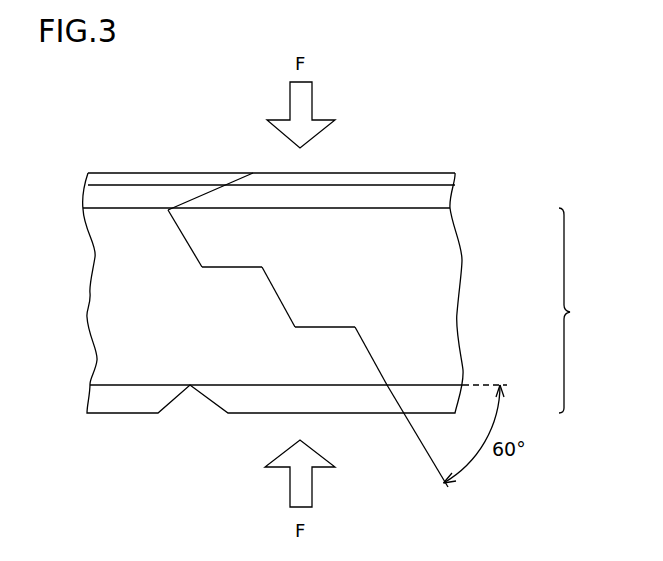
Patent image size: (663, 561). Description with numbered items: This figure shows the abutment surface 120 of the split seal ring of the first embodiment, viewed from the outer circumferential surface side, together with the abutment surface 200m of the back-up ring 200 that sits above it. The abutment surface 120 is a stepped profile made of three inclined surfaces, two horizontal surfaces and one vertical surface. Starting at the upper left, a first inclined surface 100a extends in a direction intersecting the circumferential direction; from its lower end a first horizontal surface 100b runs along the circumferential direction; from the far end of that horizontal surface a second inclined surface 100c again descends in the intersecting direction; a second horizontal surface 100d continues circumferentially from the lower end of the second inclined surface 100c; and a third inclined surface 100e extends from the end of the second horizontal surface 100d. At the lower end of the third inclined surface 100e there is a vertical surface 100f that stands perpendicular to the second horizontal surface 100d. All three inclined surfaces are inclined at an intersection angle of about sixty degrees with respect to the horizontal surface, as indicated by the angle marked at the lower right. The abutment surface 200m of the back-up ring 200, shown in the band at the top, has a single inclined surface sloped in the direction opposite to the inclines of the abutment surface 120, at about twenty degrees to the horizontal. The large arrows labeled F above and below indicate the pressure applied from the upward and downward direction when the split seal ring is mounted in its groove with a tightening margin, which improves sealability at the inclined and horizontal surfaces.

The back-up ring 200 is at (130, 193).
The abutment surface of back-up ring 200m is at (198, 192).
The first inclined surface 100a is at (190, 240).
The first horizontal surface 100b is at (228, 260).
The second inclined surface 100c is at (283, 298).
The second horizontal surface 100d is at (332, 322).
The third inclined surface 100e is at (368, 347).
The vertical surface 100f is at (395, 389).
The abutment surface of split seal ring 120 is at (585, 310).